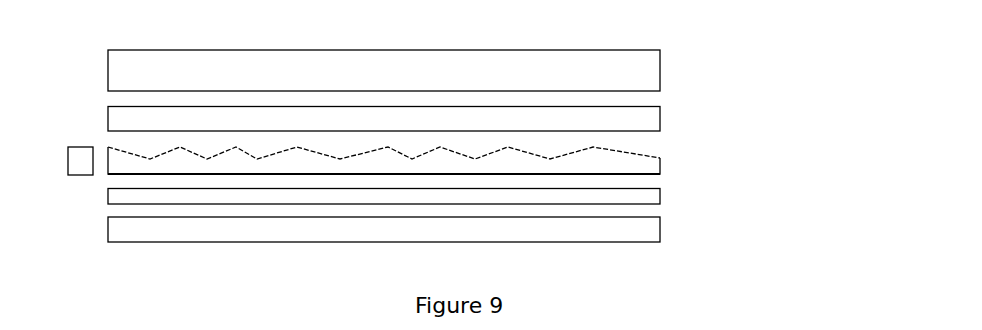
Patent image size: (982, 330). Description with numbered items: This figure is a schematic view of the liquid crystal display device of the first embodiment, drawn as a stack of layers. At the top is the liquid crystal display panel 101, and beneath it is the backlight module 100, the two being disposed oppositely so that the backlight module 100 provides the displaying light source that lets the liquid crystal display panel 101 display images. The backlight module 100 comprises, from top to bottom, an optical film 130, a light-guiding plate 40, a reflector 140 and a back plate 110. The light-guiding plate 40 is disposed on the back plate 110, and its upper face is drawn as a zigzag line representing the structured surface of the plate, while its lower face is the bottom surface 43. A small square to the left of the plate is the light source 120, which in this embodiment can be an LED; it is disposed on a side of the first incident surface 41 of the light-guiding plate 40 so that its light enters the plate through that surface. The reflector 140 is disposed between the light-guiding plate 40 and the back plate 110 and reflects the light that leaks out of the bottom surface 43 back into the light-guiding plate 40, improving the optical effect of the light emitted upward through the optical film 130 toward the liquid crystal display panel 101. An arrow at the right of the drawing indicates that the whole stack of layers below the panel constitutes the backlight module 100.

The backlight module 100 is at (460, 146).
The liquid crystal display panel 101 is at (632, 71).
The optical film 130 is at (632, 119).
The light-guiding plate 40 is at (402, 124).
The first incident surface 41 is at (106, 158).
The bottom surface 43 is at (613, 175).
The reflector 140 is at (632, 197).
The back plate 110 is at (632, 231).
The light source 120 is at (83, 160).